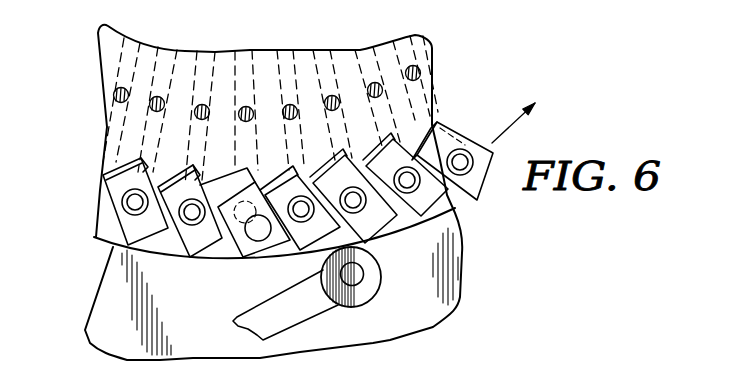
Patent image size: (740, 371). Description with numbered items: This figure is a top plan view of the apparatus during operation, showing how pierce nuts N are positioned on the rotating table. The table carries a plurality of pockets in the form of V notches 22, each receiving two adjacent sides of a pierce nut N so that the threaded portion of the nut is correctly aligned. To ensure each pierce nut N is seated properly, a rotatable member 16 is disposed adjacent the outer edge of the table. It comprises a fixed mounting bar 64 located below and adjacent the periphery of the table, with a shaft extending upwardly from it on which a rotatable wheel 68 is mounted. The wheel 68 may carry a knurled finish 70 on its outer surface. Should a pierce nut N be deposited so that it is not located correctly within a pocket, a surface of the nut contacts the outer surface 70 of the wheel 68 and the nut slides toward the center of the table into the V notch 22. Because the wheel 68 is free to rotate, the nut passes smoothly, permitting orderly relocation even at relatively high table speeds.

The V notch 22 is at (132, 165).
The rotatable member 16 is at (342, 313).
The fixed mounting bar 64 is at (262, 312).
The knurled finish 70 is at (376, 256).
The rotatable wheel 68 is at (373, 285).
The pierce nut N is at (152, 244).